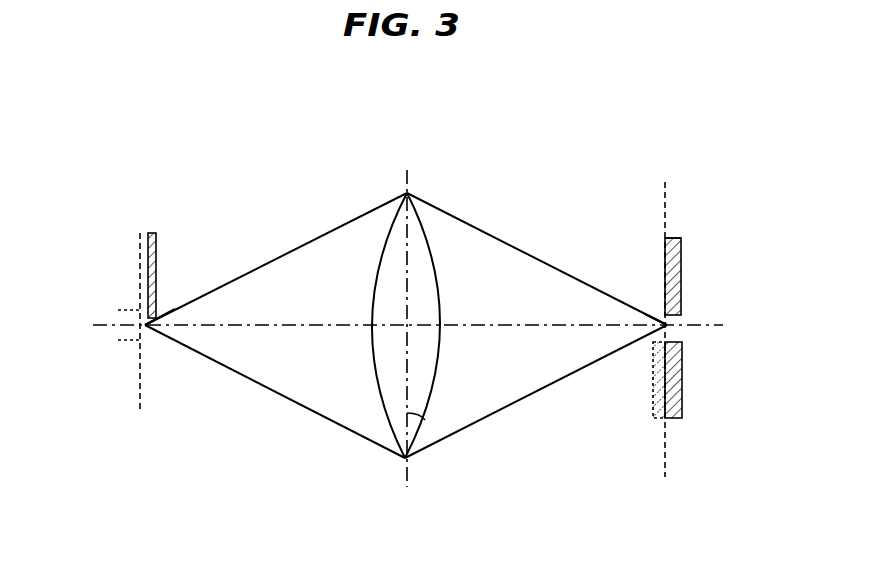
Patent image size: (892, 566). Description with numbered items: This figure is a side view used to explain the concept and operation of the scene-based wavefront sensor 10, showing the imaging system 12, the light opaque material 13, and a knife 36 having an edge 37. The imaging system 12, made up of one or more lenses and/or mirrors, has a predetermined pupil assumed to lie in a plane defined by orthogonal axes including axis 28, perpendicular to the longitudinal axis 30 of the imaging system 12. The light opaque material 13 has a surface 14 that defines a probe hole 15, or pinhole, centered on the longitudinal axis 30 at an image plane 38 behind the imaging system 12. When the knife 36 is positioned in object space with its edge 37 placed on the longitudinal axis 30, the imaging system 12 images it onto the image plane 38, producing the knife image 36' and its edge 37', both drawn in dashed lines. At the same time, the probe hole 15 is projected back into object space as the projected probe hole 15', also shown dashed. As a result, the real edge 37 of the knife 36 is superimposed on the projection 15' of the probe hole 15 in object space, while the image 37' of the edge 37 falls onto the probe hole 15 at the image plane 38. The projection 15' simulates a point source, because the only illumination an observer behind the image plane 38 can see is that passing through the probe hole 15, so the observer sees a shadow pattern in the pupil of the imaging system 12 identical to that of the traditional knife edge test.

The scene-based wavefront sensor 10 is at (599, 107).
The imaging system 12 is at (408, 192).
The light opaque material 13 is at (676, 244).
The surface 14 is at (668, 250).
The probe hole 15 is at (647, 296).
The projected probe hole 15' is at (99, 323).
The axis 28 is at (407, 413).
The longitudinal axis 30 is at (485, 325).
The knife 36 is at (183, 260).
The edge 37 is at (185, 286).
The knife image 36' is at (631, 384).
The edge image 37' is at (623, 371).
The image plane 38 is at (666, 195).